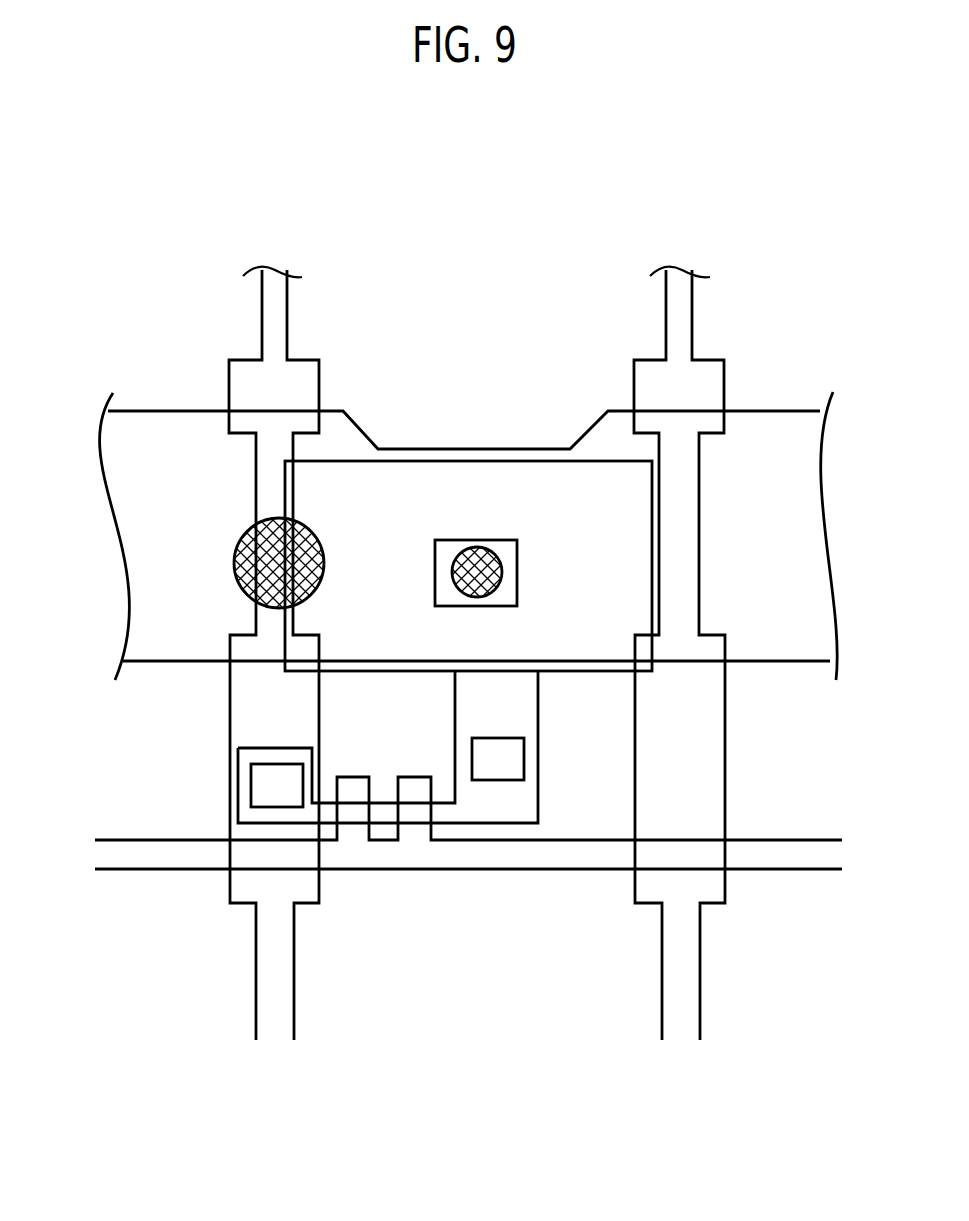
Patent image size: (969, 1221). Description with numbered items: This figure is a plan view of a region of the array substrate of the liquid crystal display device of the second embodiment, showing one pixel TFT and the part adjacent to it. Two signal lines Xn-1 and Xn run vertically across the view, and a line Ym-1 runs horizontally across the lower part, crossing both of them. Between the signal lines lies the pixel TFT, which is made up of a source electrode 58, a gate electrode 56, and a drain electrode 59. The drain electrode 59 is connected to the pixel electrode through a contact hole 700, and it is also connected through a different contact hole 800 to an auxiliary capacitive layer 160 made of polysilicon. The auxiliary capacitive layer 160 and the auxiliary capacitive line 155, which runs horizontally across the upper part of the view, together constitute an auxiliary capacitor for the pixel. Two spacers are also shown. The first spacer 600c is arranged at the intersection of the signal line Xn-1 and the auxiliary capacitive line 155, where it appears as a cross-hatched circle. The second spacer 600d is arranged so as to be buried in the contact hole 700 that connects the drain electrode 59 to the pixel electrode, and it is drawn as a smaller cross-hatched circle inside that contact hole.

The signal line Xn-1 is at (247, 367).
The signal line Xn is at (649, 372).
The scanning line Ym-1 is at (468, 882).
The auxiliary capacitive line 155 is at (777, 427).
The auxiliary capacitive layer 160 is at (458, 478).
The first spacer 600c is at (237, 577).
The second spacer 600d is at (487, 602).
The contact hole 700 is at (517, 598).
The contact hole 800 is at (524, 762).
The source electrode 58 is at (238, 790).
The drain electrode 59 is at (493, 795).
The gate electrode 56 is at (352, 810).